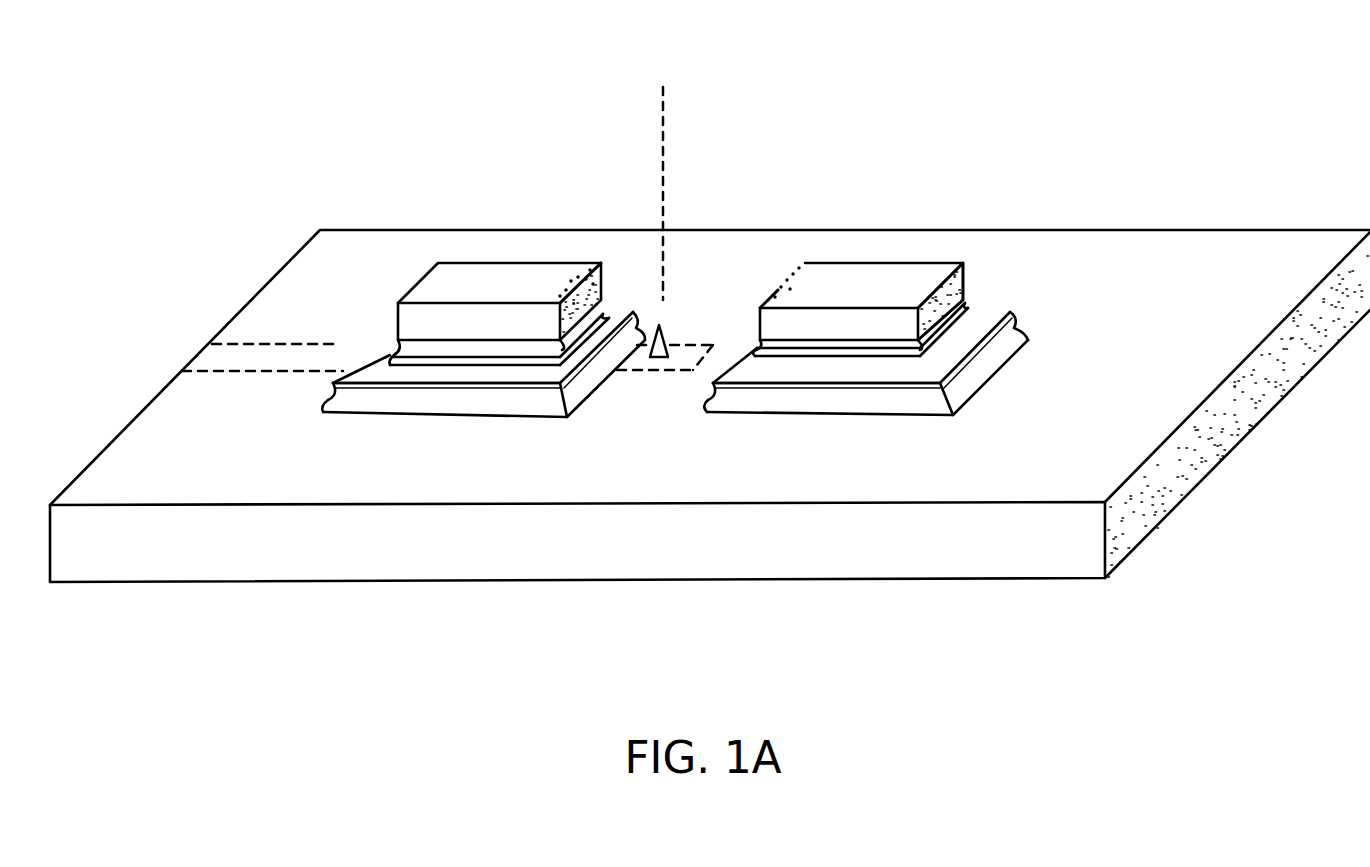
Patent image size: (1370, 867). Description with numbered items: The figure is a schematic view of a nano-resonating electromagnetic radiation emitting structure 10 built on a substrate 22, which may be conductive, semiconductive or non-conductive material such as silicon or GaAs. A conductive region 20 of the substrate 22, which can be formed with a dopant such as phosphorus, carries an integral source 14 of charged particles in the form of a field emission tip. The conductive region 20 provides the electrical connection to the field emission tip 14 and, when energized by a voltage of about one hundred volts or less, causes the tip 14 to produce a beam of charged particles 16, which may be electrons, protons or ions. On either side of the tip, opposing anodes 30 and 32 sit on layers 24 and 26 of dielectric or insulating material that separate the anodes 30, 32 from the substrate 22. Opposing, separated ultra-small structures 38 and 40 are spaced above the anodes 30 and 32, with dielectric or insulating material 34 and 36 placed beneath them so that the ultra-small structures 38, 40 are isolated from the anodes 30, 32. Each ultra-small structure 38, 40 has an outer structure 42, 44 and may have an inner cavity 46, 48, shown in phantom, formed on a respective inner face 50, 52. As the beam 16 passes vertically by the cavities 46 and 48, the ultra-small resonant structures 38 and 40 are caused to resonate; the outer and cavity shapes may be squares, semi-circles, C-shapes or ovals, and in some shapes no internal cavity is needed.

The nano-resonating electromagnetic radiation emitting structure 10 is at (1122, 165).
The integral source of charged particles 14 is at (659, 326).
The beam of charged particles 16 is at (665, 148).
The conductive region 20 is at (265, 345).
The substrate 22 is at (1065, 483).
The layer 24 is at (983, 357).
The layer 26 is at (490, 402).
The anode 30 is at (917, 372).
The anode 32 is at (397, 373).
The dielectric or insulating material 34 is at (807, 357).
The dielectric or insulating material 36 is at (443, 358).
The ultra-small structure 38 is at (902, 275).
The ultra-small structure 40 is at (441, 280).
The outer structure 42 is at (965, 277).
The outer structure 44 is at (458, 262).
The inner cavity 46 is at (805, 275).
The inner cavity 48 is at (570, 277).
The inner face 50 is at (773, 293).
The inner face 52 is at (603, 278).